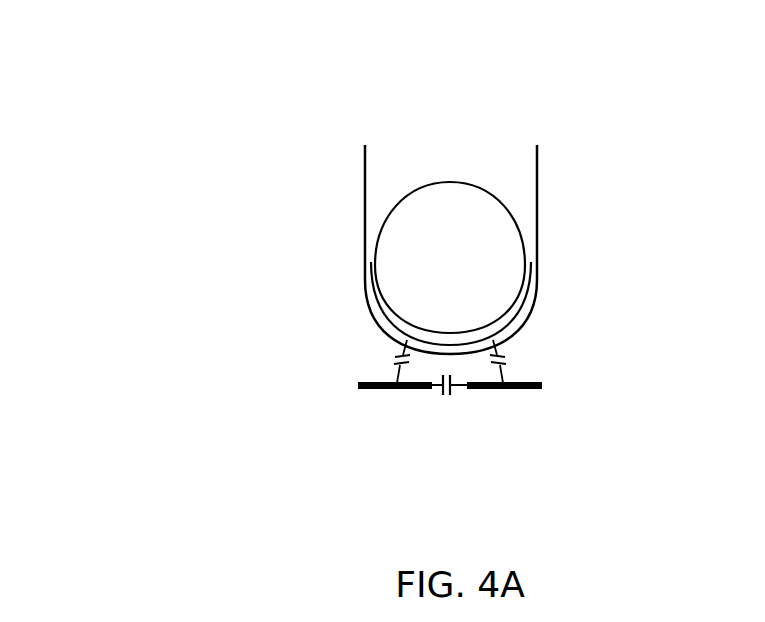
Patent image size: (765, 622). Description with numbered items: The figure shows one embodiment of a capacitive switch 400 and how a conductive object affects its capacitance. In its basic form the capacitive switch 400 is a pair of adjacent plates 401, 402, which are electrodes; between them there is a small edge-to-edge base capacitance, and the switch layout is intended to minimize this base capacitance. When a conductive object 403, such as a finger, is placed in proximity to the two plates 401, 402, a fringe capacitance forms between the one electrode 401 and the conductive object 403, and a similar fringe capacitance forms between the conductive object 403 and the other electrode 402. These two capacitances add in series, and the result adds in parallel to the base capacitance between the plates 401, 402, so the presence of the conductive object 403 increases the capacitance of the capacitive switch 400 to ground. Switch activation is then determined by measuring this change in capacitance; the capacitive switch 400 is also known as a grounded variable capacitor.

The capacitive switch 400 is at (243, 84).
The plate 401 is at (542, 383).
The plate 402 is at (356, 381).
The conductive object 403 is at (538, 180).